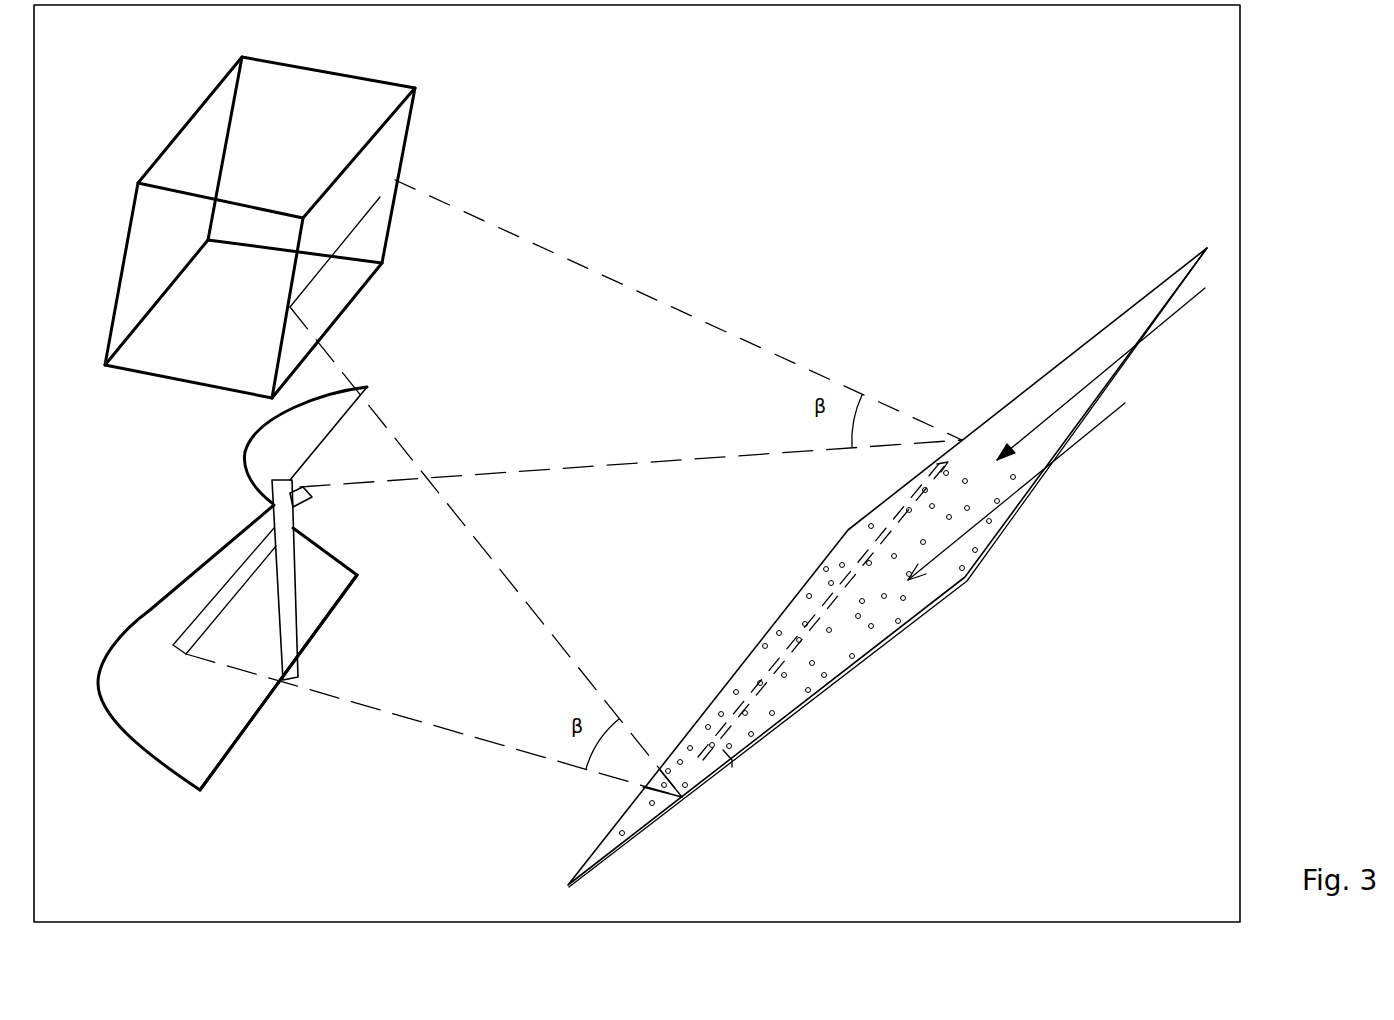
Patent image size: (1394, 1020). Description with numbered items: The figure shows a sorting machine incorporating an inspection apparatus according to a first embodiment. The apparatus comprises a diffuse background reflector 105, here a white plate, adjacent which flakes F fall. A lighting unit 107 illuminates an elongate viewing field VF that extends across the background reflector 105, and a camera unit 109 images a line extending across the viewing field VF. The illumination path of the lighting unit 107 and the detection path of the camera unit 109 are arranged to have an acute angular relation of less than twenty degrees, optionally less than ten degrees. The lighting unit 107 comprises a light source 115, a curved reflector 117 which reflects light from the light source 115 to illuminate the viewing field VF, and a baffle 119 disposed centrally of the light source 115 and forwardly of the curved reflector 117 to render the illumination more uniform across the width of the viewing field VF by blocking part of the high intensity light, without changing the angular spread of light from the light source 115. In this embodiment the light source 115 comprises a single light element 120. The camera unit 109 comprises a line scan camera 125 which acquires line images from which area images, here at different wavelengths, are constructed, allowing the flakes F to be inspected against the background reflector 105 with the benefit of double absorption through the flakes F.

The diffuse background reflector 105 is at (1010, 523).
The lighting unit 107 is at (178, 536).
The camera unit 109 is at (407, 137).
The light source 115 is at (307, 510).
The curved reflector 117 is at (232, 757).
The baffle 119 is at (297, 630).
The light element 120 is at (213, 622).
The line scan camera 125 is at (380, 207).
The flakes F is at (942, 575).
The viewing field VF is at (732, 765).